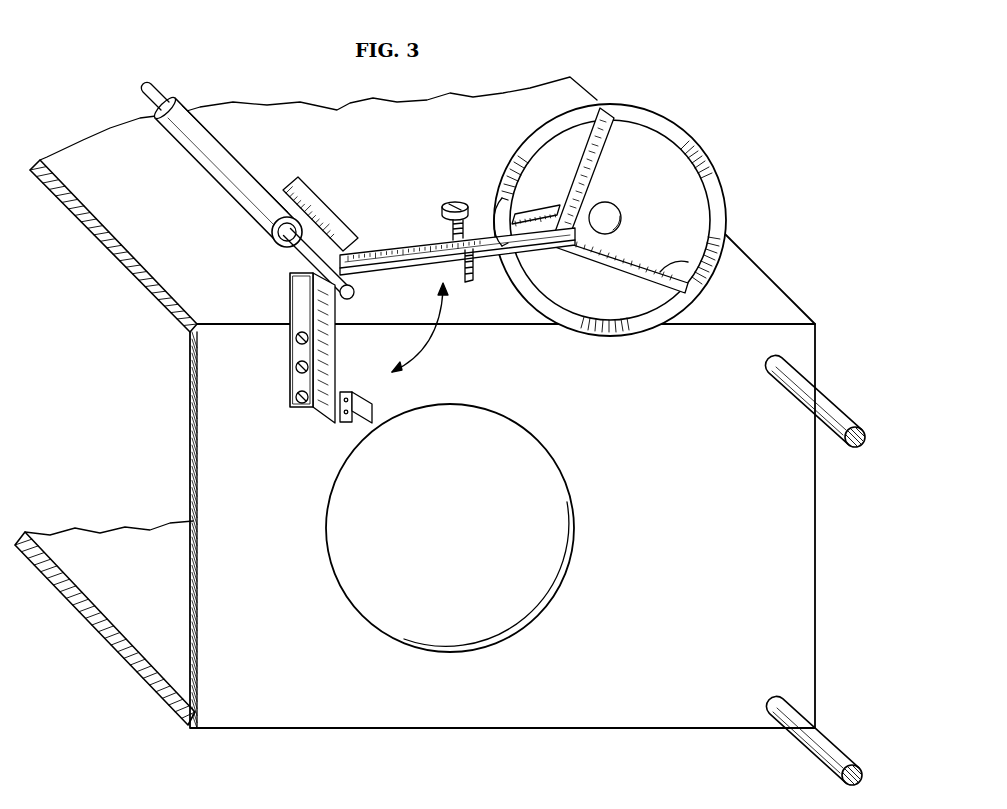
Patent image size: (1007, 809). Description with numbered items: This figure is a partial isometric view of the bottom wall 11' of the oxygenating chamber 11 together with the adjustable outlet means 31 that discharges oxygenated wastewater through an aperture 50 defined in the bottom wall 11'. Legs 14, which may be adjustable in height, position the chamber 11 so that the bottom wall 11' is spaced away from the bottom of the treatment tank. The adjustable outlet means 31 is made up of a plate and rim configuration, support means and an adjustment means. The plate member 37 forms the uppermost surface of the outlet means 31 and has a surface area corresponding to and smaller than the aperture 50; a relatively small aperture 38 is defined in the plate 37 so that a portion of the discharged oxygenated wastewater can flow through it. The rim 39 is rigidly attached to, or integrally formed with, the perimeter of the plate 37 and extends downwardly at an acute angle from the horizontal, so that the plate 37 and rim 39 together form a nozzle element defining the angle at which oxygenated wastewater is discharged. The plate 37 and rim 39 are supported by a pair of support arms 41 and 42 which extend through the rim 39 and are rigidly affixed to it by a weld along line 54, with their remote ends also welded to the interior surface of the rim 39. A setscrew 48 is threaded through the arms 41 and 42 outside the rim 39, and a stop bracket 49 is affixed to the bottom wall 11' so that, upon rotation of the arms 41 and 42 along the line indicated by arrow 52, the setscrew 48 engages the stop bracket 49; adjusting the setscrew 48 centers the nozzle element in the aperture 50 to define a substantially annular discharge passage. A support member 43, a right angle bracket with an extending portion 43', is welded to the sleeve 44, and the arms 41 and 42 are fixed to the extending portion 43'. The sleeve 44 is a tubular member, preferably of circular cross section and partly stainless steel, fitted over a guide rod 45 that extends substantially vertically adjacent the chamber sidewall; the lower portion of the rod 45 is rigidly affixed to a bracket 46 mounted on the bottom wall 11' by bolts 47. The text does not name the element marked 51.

The chamber 11 is at (422, 194).
The bottom wall 11' is at (415, 526).
The legs 14 is at (803, 393).
The adjustable outlet means 31 is at (445, 185).
The plate member 37 is at (627, 220).
The aperture 38 is at (622, 220).
The rim 39 is at (713, 168).
The support arm 41 is at (700, 282).
The support arm 42 is at (590, 183).
The support member 43 is at (322, 209).
The extending portion 43' is at (457, 259).
The sleeve 44 is at (242, 166).
The guide rod 45 is at (300, 247).
The bracket 46 is at (306, 372).
The bolts 47 is at (290, 395).
The setscrew 48 is at (440, 203).
The stop bracket 49 is at (357, 420).
The aperture 50 is at (563, 580).
The pin 51 is at (226, 117).
The arrow 52 is at (427, 350).
The weld line 54 is at (493, 200).